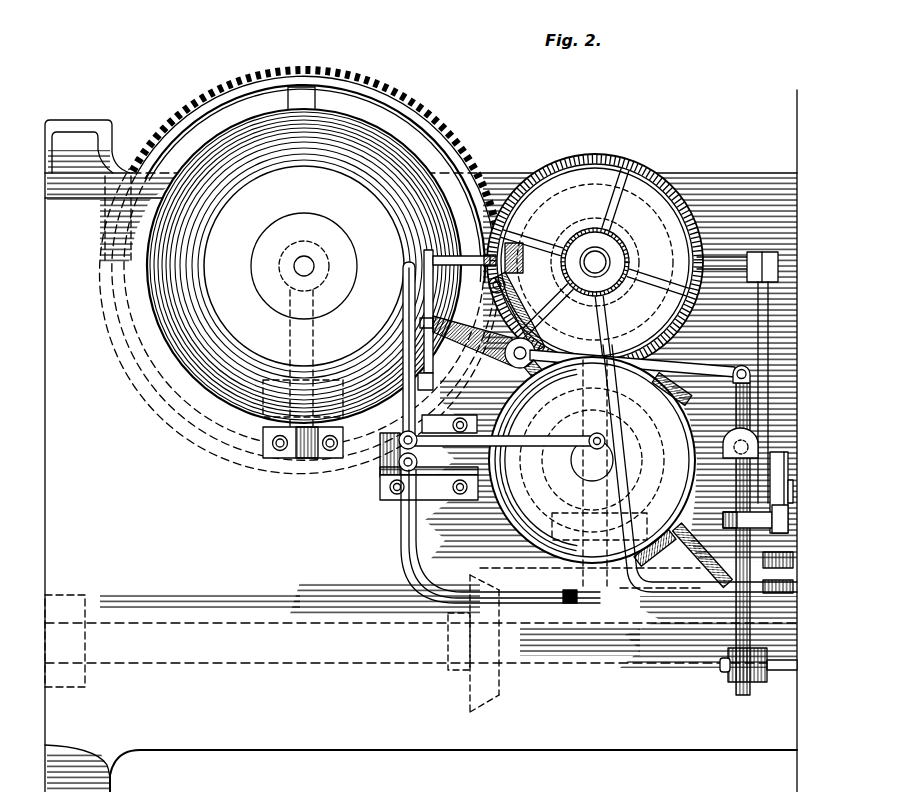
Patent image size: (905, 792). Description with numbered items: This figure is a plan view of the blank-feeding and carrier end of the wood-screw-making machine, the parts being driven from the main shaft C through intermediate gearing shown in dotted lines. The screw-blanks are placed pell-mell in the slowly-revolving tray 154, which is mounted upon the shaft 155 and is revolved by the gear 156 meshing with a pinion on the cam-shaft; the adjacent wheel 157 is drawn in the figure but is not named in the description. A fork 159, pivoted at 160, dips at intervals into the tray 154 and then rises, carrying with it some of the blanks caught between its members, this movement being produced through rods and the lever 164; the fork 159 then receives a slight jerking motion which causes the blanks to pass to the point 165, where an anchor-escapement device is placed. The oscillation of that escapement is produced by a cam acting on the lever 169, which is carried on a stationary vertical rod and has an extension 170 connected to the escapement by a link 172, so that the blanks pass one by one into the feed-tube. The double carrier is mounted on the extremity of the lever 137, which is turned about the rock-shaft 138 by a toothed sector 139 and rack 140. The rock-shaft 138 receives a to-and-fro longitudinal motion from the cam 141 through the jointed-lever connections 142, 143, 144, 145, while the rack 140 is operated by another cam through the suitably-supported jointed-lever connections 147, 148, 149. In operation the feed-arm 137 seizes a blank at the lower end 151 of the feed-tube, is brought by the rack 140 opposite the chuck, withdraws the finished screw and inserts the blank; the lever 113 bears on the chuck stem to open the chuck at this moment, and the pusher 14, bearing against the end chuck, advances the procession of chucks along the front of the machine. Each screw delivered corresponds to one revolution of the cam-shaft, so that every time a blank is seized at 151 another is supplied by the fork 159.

The gear 156 is at (228, 72).
The hand wheel 157 is at (603, 175).
The cam 141 is at (592, 228).
The jointed-lever connection 142 is at (548, 240).
The tray 154 is at (304, 266).
The shaft 155 is at (308, 262).
The fork 159 is at (420, 340).
The pivot 160 is at (400, 410).
The lever 164 is at (428, 256).
The lever 169 is at (505, 335).
The extension 170 is at (558, 415).
The link 172 is at (506, 449).
The jointed-lever connection 143 is at (505, 410).
The point 165 is at (380, 470).
The lower end of feed-tube 151 is at (566, 603).
The lever 113 is at (615, 463).
The jointed-lever connection 144 is at (695, 368).
The jointed-lever connection 147 is at (780, 262).
The jointed-lever connection 148 is at (752, 372).
The jointed-lever connection 145 is at (760, 444).
The jointed-lever connection 149 is at (790, 490).
The toothed sector 139 is at (747, 520).
The rack 140 is at (790, 520).
The pusher 14 is at (793, 562).
The lever 137 is at (785, 672).
The rock-shaft 138 is at (740, 690).
The main shaft C is at (235, 622).